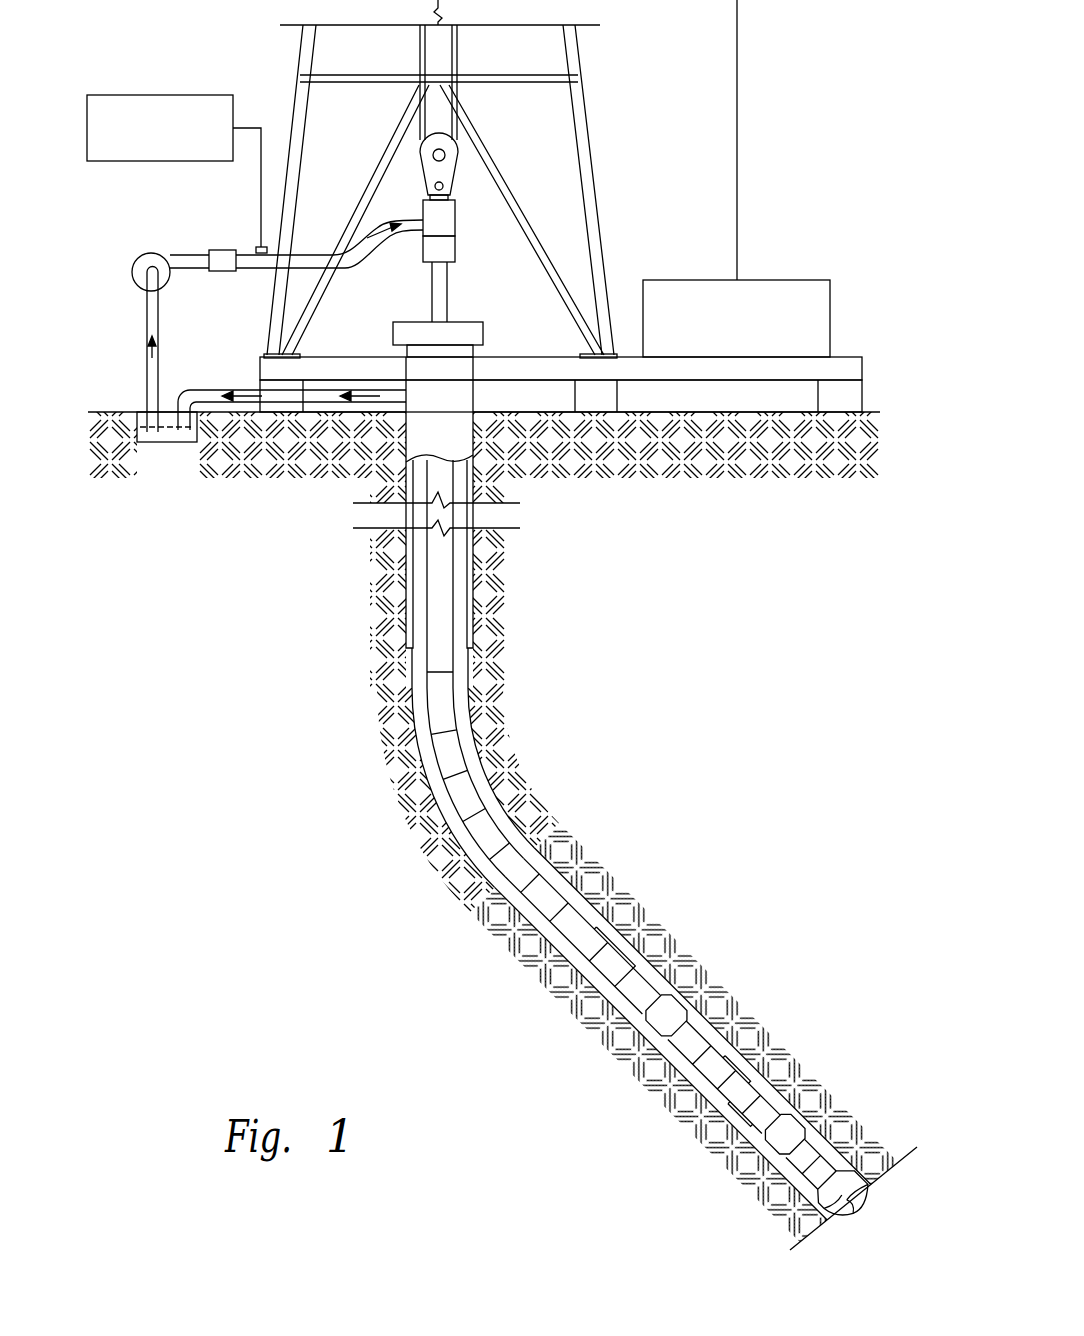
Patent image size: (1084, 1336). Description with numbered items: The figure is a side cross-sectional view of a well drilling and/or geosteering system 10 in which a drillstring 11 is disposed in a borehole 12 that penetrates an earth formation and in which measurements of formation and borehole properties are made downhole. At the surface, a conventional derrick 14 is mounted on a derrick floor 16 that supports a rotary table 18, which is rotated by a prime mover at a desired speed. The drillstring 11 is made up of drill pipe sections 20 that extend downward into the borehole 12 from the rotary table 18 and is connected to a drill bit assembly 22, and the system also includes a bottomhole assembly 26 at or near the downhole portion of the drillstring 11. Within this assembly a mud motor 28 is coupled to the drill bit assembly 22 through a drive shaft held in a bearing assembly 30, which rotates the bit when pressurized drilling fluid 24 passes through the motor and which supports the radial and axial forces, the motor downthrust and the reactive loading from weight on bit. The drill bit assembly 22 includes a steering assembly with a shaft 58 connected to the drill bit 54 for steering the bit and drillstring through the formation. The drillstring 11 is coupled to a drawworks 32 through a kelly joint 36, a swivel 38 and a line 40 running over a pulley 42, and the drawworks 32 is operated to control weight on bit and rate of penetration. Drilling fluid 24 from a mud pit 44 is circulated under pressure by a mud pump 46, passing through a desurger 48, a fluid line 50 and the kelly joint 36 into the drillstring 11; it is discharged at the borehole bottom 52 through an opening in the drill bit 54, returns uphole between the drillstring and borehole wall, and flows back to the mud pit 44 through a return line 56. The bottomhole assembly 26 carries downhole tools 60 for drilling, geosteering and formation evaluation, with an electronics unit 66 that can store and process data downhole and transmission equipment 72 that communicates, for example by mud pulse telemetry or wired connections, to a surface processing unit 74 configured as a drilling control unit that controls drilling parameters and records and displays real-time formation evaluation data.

The well drilling and/or geosteering system 10 is at (262, 50).
The drillstring 11 is at (462, 567).
The borehole 12 is at (472, 757).
The derrick 14 is at (596, 178).
The derrick floor 16 is at (515, 355).
The rotary table 18 is at (475, 320).
The drill pipe sections 20 is at (453, 607).
The drill bit assembly 22 is at (842, 1153).
The drilling fluid 24 is at (150, 436).
The bottomhole assembly 26 is at (747, 1064).
The mud motor 28 is at (600, 952).
The bearing assembly 30 is at (787, 1143).
The drawworks 32 is at (790, 280).
The kelly joint 36 is at (430, 300).
The swivel 38 is at (456, 215).
The line 40 is at (460, 48).
The pulley 42 is at (432, 172).
The mud pit 44 is at (188, 444).
The mud pump 46 is at (150, 252).
The desurger 48 is at (226, 250).
The fluid line 50 is at (259, 270).
The borehole bottom 52 is at (790, 1250).
The drill bit 54 is at (858, 1165).
The return line 56 is at (245, 388).
The shaft 58 is at (792, 1175).
The downhole tools 60 is at (690, 1122).
The electronics unit 66 is at (695, 1090).
The transmission equipment 72 is at (662, 1065).
The surface processing unit 74 is at (150, 95).